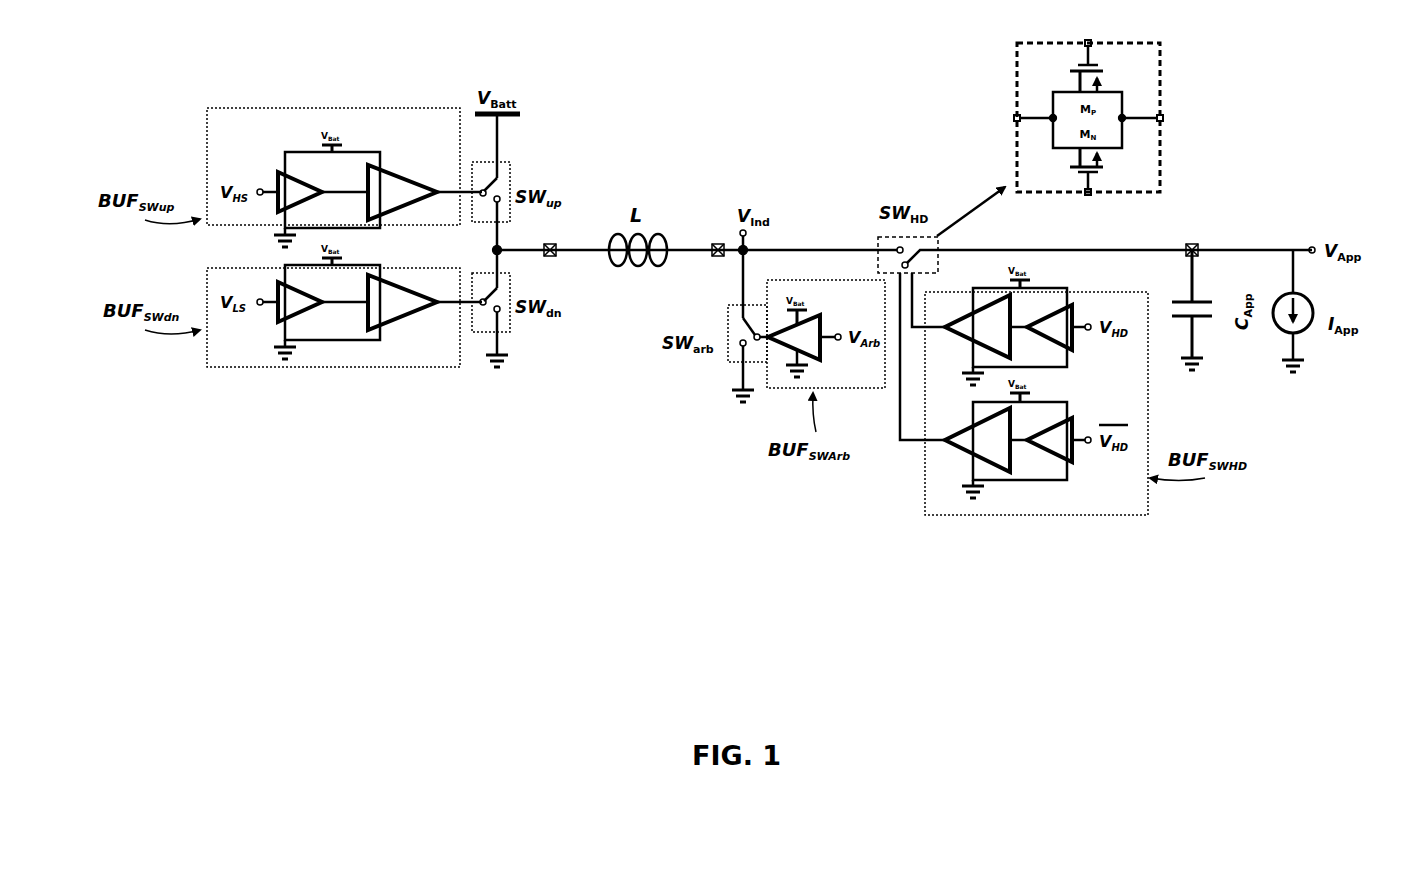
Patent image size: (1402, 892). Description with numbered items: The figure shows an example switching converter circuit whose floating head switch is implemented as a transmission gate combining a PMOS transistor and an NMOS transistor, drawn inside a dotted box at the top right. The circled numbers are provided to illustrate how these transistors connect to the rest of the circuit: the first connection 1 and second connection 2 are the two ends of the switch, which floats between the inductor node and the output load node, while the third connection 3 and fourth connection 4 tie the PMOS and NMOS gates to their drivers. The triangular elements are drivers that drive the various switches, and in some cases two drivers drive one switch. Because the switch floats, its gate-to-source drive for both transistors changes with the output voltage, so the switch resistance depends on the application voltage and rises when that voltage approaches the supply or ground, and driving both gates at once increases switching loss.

The first connection 1 is at (954, 179).
The second connection 2 is at (1049, 186).
The third connection 3 is at (1013, 161).
The fourth connection 4 is at (1003, 303).